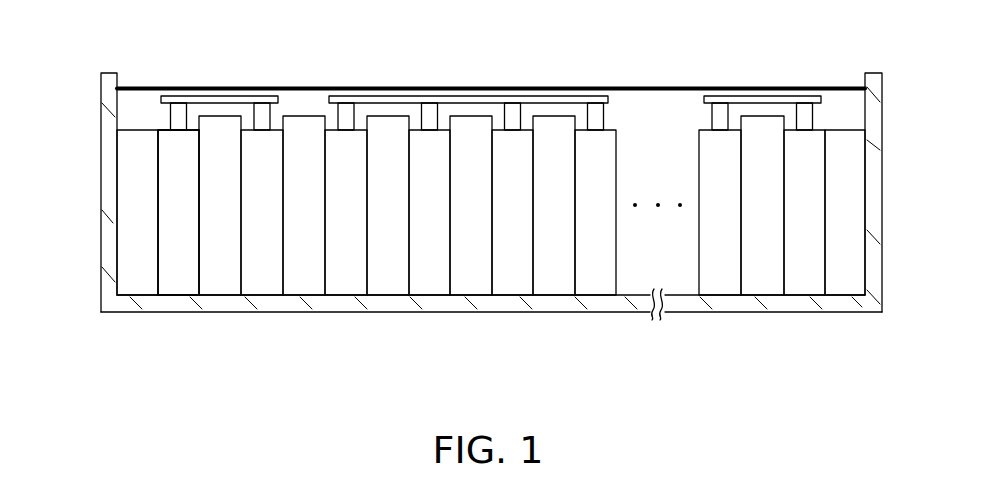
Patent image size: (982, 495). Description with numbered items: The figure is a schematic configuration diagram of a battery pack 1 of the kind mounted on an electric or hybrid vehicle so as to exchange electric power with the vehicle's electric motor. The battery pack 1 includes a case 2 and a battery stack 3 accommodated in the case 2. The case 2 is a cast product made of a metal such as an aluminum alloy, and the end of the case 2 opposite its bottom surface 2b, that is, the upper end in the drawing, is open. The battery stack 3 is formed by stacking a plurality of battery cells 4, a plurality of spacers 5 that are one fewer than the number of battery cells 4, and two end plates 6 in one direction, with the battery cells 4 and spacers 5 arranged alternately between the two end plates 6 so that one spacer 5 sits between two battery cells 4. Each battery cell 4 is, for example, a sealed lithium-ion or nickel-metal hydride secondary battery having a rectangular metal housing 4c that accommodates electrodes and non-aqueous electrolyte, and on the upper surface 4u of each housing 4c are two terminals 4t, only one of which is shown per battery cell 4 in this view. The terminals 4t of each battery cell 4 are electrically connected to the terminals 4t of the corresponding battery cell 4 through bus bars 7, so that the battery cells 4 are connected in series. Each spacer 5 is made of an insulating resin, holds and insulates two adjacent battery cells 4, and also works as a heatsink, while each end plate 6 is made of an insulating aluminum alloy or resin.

The battery pack 1 is at (82, 98).
The case 2 is at (100, 278).
The bottom surface 2b is at (633, 312).
The battery stack 3 is at (833, 127).
The battery cell 4 is at (175, 283).
The terminal 4t is at (179, 112).
The upper surface 4u is at (162, 130).
The housing 4c is at (178, 213).
The spacer 5 is at (217, 283).
The end plate 6 is at (135, 283).
The bus bar 7 is at (213, 93).